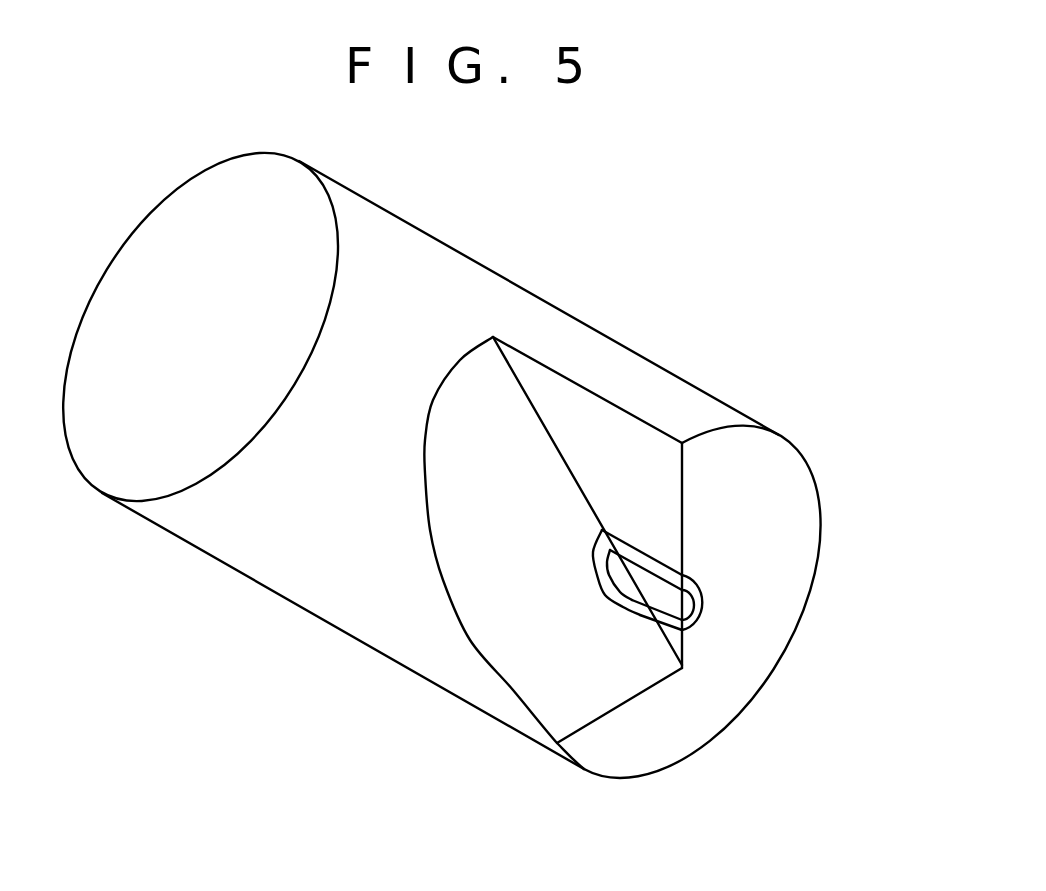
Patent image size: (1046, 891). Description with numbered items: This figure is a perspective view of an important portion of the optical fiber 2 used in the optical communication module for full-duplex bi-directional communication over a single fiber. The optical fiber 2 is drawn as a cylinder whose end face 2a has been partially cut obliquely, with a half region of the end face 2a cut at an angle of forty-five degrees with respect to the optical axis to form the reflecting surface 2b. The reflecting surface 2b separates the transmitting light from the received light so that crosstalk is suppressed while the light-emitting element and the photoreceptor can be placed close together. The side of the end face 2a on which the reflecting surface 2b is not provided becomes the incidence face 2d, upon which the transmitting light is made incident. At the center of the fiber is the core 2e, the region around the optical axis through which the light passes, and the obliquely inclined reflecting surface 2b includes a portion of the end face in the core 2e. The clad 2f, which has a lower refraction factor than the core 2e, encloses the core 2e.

The optical fiber 2 is at (645, 568).
The end face 2a is at (787, 515).
The reflecting surface 2b is at (600, 557).
The incidence face 2d is at (713, 588).
The core 2e is at (688, 600).
The clad 2f is at (668, 614).